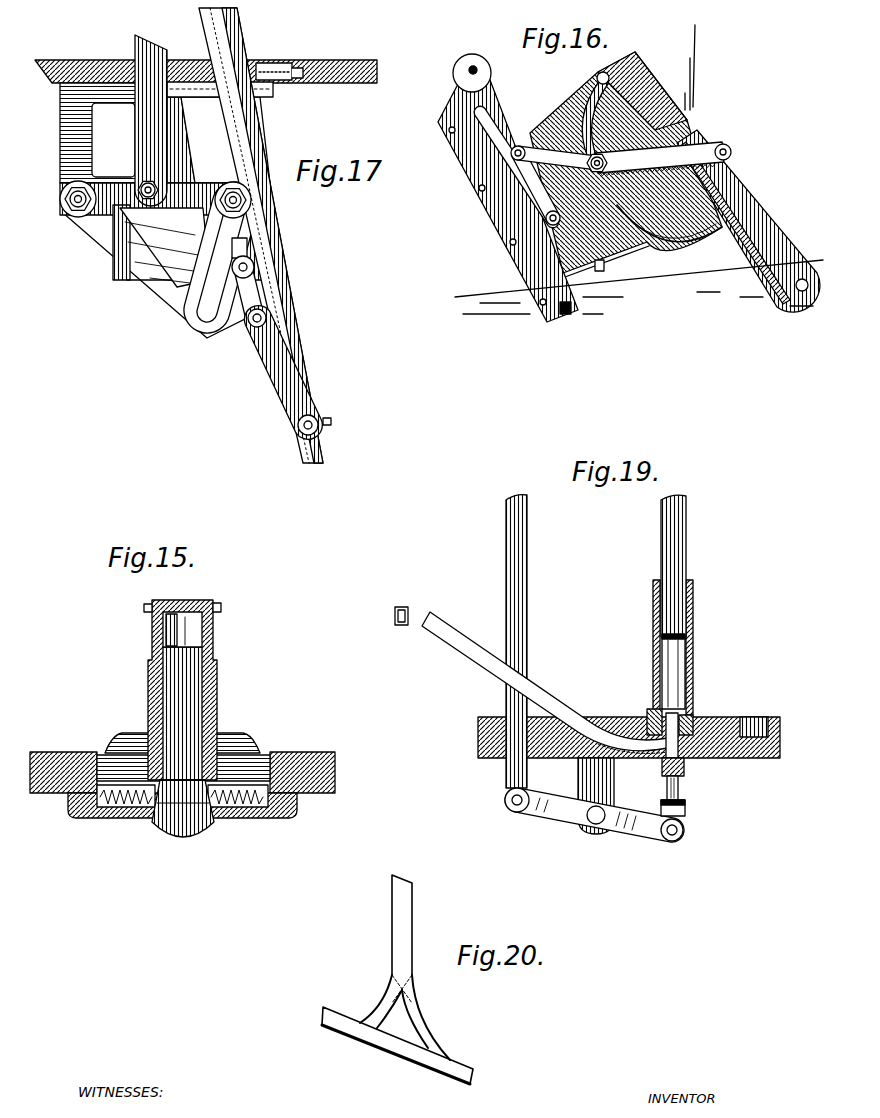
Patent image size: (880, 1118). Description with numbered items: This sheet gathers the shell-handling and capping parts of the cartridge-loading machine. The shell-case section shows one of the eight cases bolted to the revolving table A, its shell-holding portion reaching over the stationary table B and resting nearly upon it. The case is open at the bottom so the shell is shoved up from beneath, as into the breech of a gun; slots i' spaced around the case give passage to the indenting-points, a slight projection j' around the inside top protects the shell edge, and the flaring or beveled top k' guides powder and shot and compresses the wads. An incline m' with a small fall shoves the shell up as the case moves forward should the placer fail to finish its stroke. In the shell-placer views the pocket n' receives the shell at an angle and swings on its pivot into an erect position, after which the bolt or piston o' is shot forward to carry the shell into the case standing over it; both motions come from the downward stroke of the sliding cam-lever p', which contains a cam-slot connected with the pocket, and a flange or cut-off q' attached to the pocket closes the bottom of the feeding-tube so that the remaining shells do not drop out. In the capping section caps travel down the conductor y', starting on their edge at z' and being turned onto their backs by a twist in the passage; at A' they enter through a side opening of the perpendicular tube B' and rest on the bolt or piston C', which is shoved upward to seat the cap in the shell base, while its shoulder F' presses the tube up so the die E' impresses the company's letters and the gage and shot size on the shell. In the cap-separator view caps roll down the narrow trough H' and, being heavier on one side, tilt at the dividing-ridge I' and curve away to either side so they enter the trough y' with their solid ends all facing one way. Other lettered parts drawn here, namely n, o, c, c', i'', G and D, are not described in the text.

In FIG. 17, the revolving table A is at (206, 62).
In FIG. 19, the revolving table A is at (762, 705).
In FIG. 17, the slanted guide bar n is at (261, 235).
In FIG. 17, the pocket n' is at (257, 205).
In FIG. 17, the sliding cam-lever p' is at (171, 260).
In FIG. 16, the sliding cam-lever p' is at (508, 188).
In FIG. 17, the link o is at (283, 373).
In FIG. 17, the bolt or piston o' is at (326, 425).
In FIG. 16, the flange or cut-off q' is at (589, 115).
In FIG. 16, the graduated sector c' is at (626, 164).
In FIG. 16, the arm c is at (748, 221).
In FIG. 15, the stationary table B is at (182, 761).
In FIG. 19, the stationary table B is at (629, 737).
In FIG. 15, the incline m' is at (216, 800).
In FIG. 15, the slots i' is at (190, 690).
In FIG. 15, the springs i'' is at (182, 815).
In FIG. 15, the projection j' is at (182, 606).
In FIG. 15, the flaring or beveled top k' is at (182, 678).
In FIG. 19, the cap starting position z' is at (405, 606).
In FIG. 19, the conductor y' is at (545, 682).
In FIG. 20, the conductor y' is at (397, 1045).
In FIG. 19, the spindle G is at (673, 605).
In FIG. 19, the die E' is at (643, 714).
In FIG. 19, the side opening A' is at (701, 714).
In FIG. 19, the perpendicular tube B' is at (685, 768).
In FIG. 19, the bolt or piston C' is at (688, 788).
In FIG. 19, the shoulder F' is at (686, 811).
In FIG. 19, the link D is at (594, 815).
In FIG. 20, the narrow trough H' is at (414, 925).
In FIG. 20, the dividing-ridge I' is at (405, 1017).